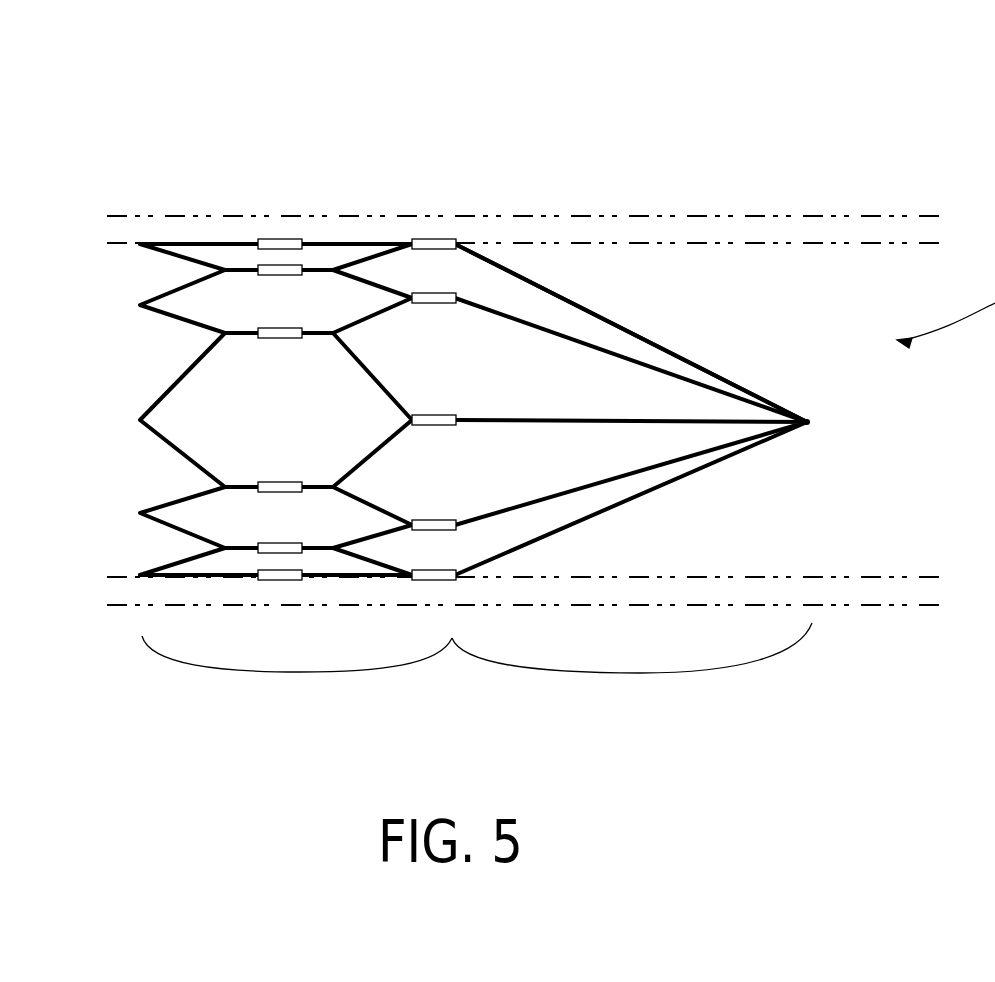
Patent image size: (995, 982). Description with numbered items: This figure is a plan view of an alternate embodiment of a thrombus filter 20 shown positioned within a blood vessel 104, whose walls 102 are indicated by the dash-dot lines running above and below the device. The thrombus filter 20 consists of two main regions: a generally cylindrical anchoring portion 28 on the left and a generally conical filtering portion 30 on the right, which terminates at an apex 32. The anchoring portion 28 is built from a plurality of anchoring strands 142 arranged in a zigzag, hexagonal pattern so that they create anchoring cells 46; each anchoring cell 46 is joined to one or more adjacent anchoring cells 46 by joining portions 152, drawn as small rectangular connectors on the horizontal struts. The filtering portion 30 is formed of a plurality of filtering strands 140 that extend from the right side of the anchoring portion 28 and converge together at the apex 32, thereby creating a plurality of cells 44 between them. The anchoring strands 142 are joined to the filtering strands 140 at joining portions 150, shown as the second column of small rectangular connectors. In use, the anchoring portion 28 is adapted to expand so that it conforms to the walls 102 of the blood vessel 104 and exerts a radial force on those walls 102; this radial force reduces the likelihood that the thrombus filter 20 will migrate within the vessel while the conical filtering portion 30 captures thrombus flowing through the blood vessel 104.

The thrombus filter 20 is at (520, 381).
The anchoring portion 28 is at (300, 672).
The filtering portion 30 is at (632, 673).
The apex 32 is at (798, 388).
The cells 44 is at (555, 383).
The anchoring cells 46 is at (298, 310).
The walls 102 is at (725, 235).
The blood vessel 104 is at (863, 210).
The filtering strands 140 is at (503, 280).
The anchoring strands 142 is at (197, 250).
The joining portions 150 is at (436, 240).
The joining portions 152 is at (285, 240).